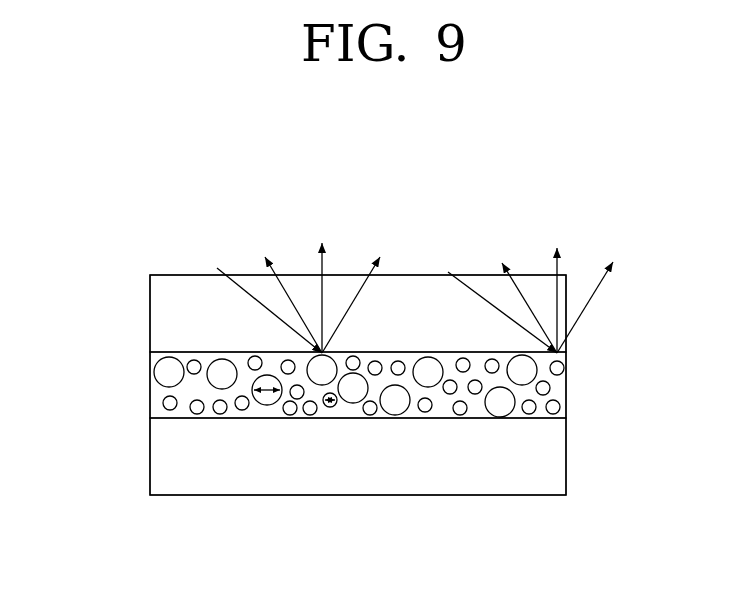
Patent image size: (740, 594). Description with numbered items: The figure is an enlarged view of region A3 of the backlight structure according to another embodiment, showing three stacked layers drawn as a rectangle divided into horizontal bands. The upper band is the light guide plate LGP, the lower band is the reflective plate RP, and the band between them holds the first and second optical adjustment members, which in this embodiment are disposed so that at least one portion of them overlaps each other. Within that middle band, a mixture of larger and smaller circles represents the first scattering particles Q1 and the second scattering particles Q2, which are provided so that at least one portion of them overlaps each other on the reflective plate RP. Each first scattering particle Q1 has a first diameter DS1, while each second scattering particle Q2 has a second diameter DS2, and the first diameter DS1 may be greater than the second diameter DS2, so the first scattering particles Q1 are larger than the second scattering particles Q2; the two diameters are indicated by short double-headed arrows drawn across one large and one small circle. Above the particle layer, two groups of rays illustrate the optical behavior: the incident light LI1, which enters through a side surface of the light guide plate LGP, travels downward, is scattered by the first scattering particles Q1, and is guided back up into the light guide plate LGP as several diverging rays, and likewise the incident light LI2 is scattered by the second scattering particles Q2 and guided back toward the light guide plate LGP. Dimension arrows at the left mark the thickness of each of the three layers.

The region A3 is at (535, 200).
The light guide plate LGP is at (150, 275).
The reflective plate RP is at (150, 495).
The incident light LI1 is at (287, 298).
The incident light LI2 is at (519, 299).
The first diameter DS1 is at (267, 392).
The second diameter DS2 is at (330, 403).
The first scattering particle Q1 is at (500, 408).
The second scattering particle Q2 is at (555, 388).